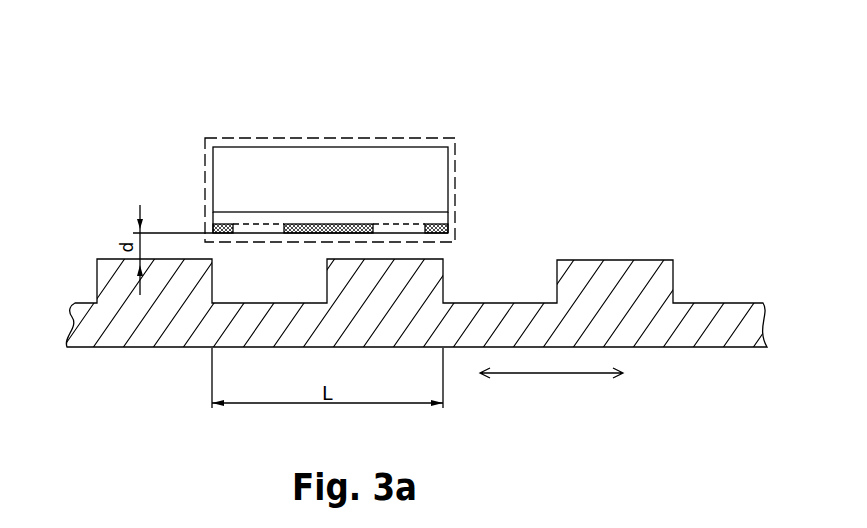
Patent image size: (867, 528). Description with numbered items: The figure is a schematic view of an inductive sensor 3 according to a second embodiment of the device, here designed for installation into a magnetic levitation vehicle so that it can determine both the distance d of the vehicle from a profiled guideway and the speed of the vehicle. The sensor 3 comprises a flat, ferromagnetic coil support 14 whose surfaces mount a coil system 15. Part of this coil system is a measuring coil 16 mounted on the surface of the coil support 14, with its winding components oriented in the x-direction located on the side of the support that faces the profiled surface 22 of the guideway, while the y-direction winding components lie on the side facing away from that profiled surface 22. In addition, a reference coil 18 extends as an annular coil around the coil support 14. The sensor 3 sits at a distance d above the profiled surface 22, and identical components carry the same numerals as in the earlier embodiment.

The sensor 3 is at (455, 138).
The coil support 14 is at (440, 214).
The coil system 15 is at (407, 230).
The measuring coil 16 is at (217, 228).
The reference coil 18 is at (325, 234).
The profiled surface 22 is at (608, 272).